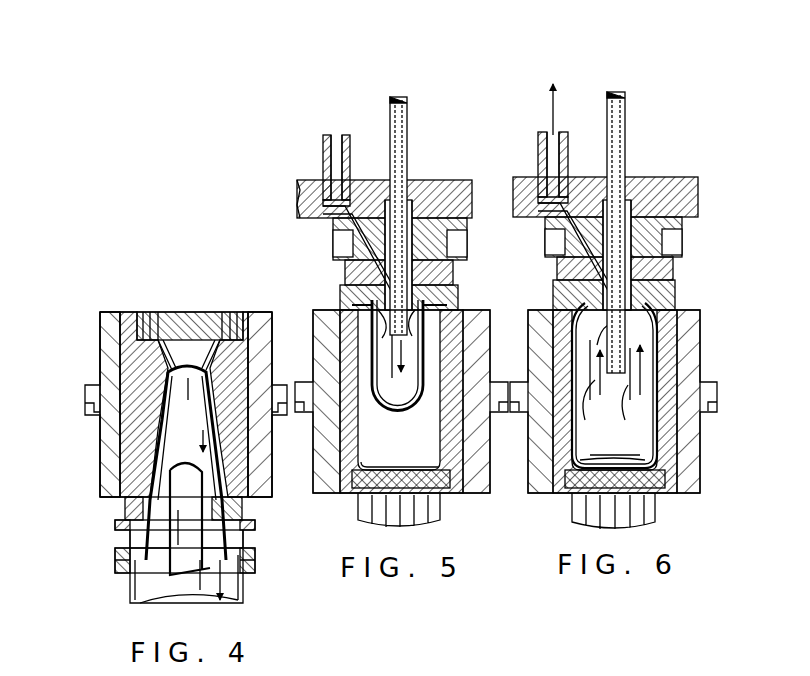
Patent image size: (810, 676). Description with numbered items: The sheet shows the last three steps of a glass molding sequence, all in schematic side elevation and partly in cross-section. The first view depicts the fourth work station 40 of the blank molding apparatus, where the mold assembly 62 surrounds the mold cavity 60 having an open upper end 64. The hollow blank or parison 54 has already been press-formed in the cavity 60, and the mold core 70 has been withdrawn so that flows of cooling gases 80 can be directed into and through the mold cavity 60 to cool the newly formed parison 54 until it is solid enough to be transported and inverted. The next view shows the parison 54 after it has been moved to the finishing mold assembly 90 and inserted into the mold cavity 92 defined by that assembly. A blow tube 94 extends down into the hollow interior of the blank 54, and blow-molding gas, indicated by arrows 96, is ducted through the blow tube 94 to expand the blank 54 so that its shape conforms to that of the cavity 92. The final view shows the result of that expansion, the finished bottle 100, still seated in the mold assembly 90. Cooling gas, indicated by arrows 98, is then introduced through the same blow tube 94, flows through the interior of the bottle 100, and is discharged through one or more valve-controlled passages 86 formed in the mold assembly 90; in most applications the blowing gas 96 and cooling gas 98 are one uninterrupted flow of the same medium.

In FIG. 4, the work station 40 is at (112, 282).
In FIG. 4, the mold assembly 62 is at (98, 340).
In FIG. 4, the hollow blank or parison 54 is at (232, 335).
In FIG. 4, the open upper end 64 is at (195, 332).
In FIG. 4, the mold cavity 60 is at (140, 435).
In FIG. 4, the mold core 70 is at (232, 542).
In FIG. 4, the flows of cooling gases 80 is at (128, 498).
In FIG. 5, the valve-controlled passages 86 is at (340, 242).
In FIG. 6, the valve-controlled passages 86 is at (552, 241).
In FIG. 5, the blow tube 94 is at (408, 156).
In FIG. 6, the blow tube 94 is at (627, 144).
In FIG. 5, the finishing mold assembly 90 is at (477, 495).
In FIG. 6, the finishing mold assembly 90 is at (696, 495).
In FIG. 5, the mold cavity 92 is at (437, 437).
In FIG. 6, the mold cavity 92 is at (655, 420).
In FIG. 5, the flow of blow-molding gas 96 is at (440, 312).
In FIG. 6, the flow of cooling gas 98 is at (554, 120).
In FIG. 6, the bottle 100 is at (680, 355).